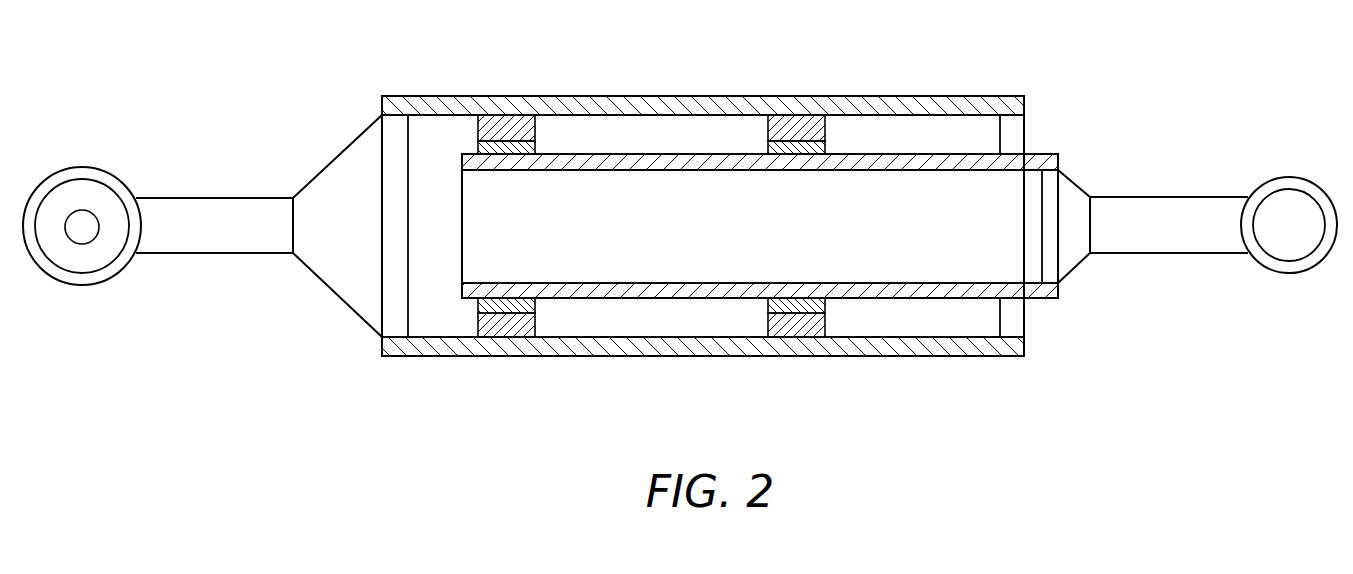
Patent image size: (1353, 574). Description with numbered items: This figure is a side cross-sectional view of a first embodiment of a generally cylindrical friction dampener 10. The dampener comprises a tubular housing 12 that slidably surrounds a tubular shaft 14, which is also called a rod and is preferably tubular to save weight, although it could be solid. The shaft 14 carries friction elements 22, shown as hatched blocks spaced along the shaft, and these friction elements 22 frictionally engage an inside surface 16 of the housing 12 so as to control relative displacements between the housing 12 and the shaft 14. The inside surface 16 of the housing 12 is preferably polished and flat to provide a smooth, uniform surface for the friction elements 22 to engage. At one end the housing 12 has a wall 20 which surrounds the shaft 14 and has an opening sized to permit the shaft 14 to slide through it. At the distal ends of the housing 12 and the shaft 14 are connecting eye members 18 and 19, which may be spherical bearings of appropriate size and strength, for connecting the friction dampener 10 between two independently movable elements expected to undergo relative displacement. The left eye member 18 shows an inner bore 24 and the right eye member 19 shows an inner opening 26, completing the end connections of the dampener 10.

The friction dampener 10 is at (313, 88).
The tubular housing 12 is at (566, 96).
The tubular shaft 14 is at (580, 300).
The inside surface 16 is at (875, 132).
The connecting eye member 18 is at (86, 286).
The connecting eye member 19 is at (1287, 272).
The wall 20 is at (1025, 131).
The friction elements 22 is at (535, 128).
The bushing opening 24 is at (82, 224).
The eye opening 26 is at (1278, 212).